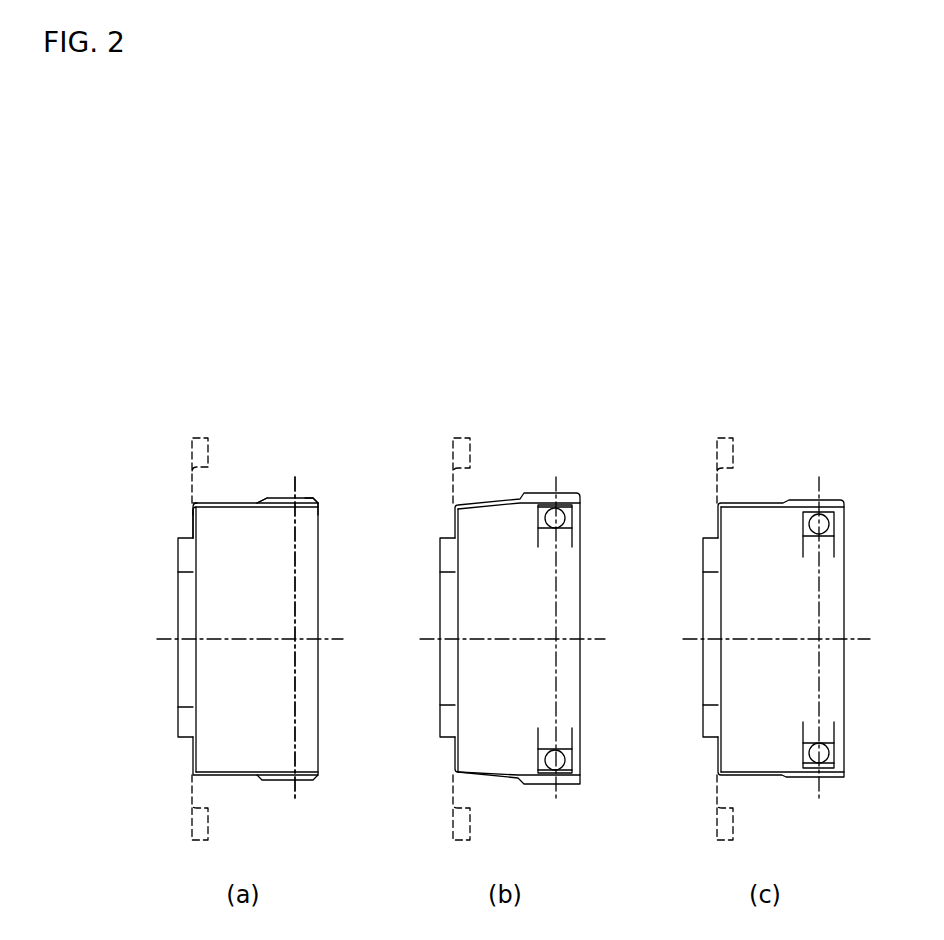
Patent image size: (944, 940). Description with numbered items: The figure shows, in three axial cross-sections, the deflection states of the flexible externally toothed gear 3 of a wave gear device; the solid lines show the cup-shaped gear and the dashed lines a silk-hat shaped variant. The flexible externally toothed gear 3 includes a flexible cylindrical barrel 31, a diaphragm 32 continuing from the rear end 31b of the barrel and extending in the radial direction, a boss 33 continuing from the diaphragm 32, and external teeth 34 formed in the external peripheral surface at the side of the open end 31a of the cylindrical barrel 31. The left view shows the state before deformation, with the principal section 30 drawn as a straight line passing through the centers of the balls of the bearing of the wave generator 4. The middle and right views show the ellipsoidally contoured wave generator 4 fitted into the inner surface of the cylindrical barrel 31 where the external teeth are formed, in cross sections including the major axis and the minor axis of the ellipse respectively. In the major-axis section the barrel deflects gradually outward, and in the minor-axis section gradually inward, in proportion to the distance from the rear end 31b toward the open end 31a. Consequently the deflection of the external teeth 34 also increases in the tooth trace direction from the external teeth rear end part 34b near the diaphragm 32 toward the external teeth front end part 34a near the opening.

The flexible externally toothed gear 3 is at (466, 554).
The wave generator 4 is at (568, 538).
The principal section 30 is at (294, 578).
The flexible cylindrical barrel 31 is at (233, 508).
The open end 31a is at (318, 503).
The rear end 31b is at (190, 515).
The diaphragm 32 is at (190, 523).
The boss 33 is at (185, 558).
The external teeth 34 is at (302, 498).
The external teeth front end part 34a is at (312, 497).
The external teeth rear end part 34b is at (265, 497).